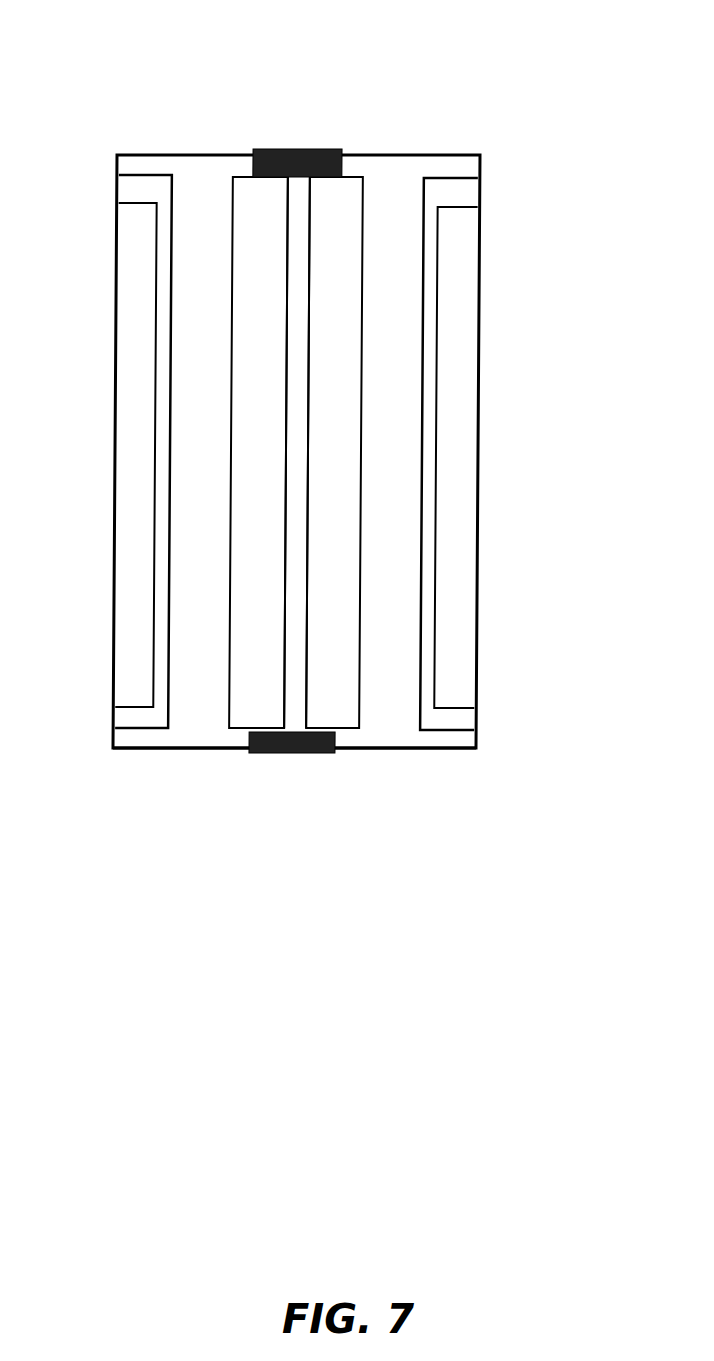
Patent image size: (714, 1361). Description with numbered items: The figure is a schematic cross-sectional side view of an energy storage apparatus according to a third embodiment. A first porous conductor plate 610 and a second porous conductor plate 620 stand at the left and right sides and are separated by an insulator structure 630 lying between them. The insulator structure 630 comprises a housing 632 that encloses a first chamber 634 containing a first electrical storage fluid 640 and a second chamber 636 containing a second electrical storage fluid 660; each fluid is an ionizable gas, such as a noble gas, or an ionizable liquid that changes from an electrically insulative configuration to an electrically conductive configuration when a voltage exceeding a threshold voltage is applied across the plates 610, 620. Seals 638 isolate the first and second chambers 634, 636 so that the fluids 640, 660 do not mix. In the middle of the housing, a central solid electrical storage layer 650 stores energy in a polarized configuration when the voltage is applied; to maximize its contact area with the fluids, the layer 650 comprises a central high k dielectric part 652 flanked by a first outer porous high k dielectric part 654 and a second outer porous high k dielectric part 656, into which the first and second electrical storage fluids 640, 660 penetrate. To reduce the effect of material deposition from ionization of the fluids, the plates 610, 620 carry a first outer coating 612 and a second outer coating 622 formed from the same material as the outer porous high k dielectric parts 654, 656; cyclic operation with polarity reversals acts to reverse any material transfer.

The insulator structure 630 is at (286, 106).
The housing 632 is at (432, 150).
The first chamber 634 is at (215, 748).
The second chamber 636 is at (375, 753).
The seals 638 is at (323, 148).
The first porous conductor plate 610 is at (132, 660).
The first outer coating 612 is at (162, 543).
The second porous conductor plate 620 is at (453, 663).
The second outer coating 622 is at (430, 484).
The first electrical storage fluid 640 is at (200, 317).
The second electrical storage fluid 660 is at (375, 355).
The central high k dielectric part 652 is at (300, 431).
The first outer porous high k dielectric part 654 is at (256, 270).
The second outer porous high k dielectric part 656 is at (335, 268).
The central solid electrical storage layer 650 is at (392, 538).